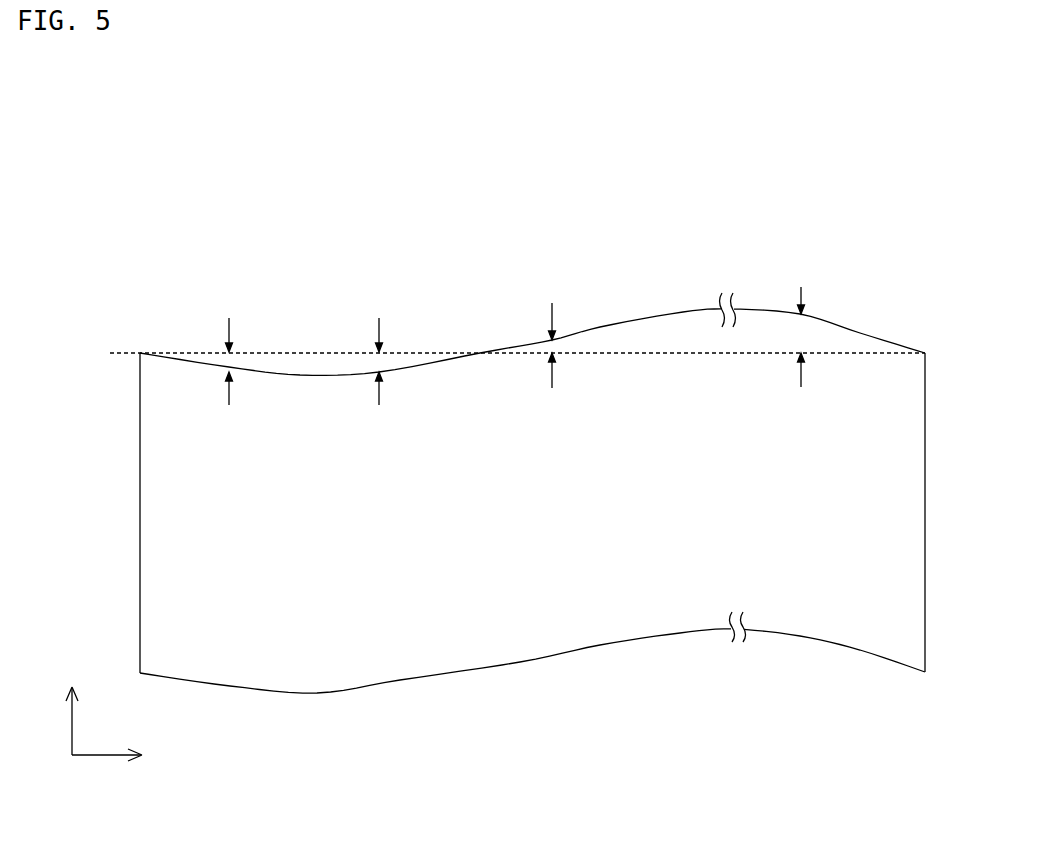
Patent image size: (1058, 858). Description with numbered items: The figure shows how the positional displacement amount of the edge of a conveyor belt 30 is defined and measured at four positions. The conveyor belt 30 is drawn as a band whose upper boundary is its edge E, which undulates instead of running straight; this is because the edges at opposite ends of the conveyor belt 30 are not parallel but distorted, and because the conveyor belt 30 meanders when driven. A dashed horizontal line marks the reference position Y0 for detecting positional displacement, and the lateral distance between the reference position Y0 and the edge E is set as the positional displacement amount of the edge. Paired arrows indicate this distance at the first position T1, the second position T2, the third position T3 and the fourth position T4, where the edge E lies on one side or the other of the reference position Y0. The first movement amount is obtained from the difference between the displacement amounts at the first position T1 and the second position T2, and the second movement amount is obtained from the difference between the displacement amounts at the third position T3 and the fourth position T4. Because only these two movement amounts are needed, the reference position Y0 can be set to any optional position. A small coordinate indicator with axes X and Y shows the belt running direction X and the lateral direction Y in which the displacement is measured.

The conveyor belt 30 is at (535, 429).
The edge of the conveyor belt E is at (683, 311).
The reference position Y0 is at (498, 353).
The first position T1 is at (228, 325).
The second position T2 is at (378, 325).
The third position T3 is at (550, 317).
The fourth position T4 is at (800, 317).
The X axis direction X is at (121, 755).
The Y axis direction Y is at (71, 705).